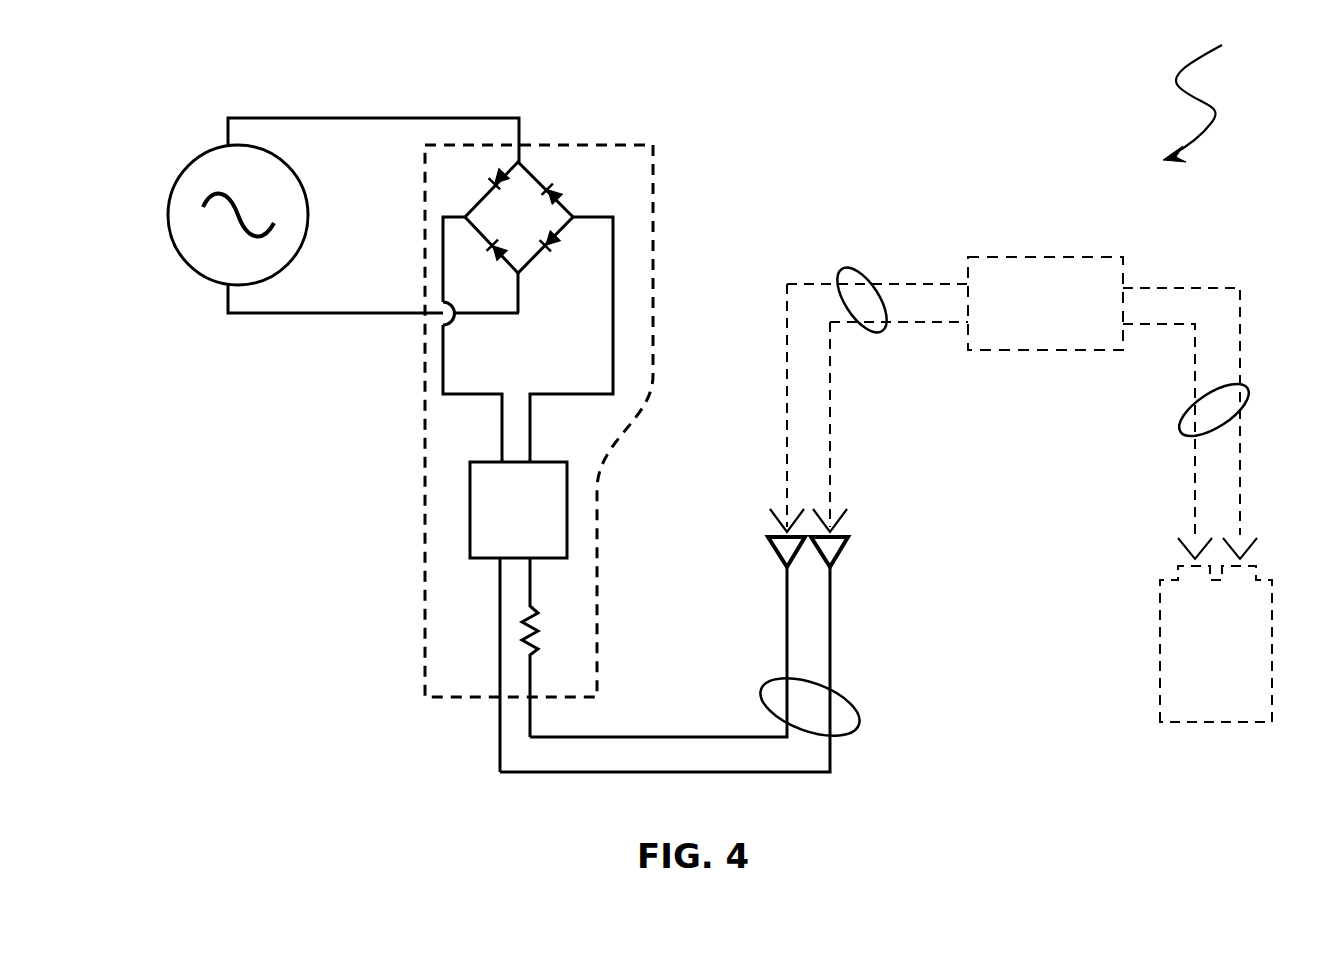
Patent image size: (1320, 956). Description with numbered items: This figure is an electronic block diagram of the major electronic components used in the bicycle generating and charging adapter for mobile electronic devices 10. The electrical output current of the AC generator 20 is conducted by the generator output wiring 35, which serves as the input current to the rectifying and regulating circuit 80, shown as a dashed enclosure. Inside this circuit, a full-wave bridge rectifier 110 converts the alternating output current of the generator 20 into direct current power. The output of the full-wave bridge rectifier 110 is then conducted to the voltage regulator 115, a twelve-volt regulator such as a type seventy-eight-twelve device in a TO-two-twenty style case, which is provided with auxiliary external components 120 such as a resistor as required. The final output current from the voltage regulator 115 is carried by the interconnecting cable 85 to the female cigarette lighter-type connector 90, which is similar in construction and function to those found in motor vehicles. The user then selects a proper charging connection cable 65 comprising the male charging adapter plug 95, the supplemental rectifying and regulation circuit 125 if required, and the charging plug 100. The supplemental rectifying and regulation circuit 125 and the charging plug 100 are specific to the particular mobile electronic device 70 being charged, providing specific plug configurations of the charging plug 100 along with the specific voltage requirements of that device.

The bicycle generating and charging adapter for mobile electronic devices 10 is at (1211, 92).
The AC generator 20 is at (202, 173).
The generator output wiring 35 is at (327, 313).
The charging connection cable 65 is at (845, 268).
The mobile electronic device 70 is at (1210, 652).
The rectifying and regulating circuit 80 is at (653, 195).
The interconnecting cable 85 is at (858, 727).
The female cigarette lighter-type connector 90 is at (848, 545).
The male charging adapter plug 95 is at (780, 530).
The charging plug 100 is at (1185, 551).
The full-wave bridge rectifier 110 is at (527, 215).
The voltage regulator 115 is at (500, 503).
The auxiliary external components 120 is at (540, 623).
The supplemental rectifying and regulation circuit 125 is at (1055, 303).